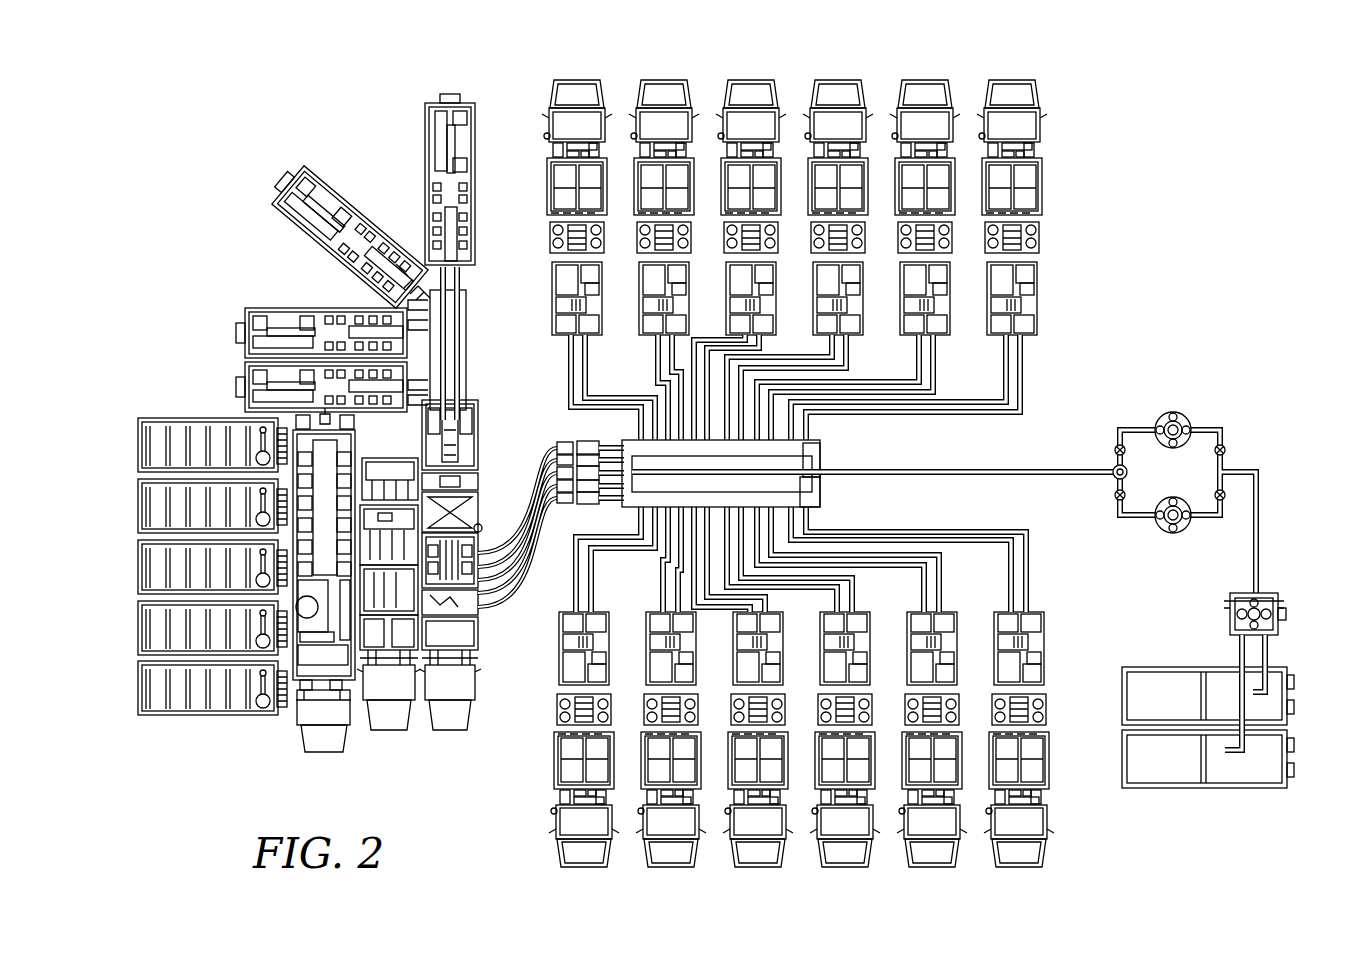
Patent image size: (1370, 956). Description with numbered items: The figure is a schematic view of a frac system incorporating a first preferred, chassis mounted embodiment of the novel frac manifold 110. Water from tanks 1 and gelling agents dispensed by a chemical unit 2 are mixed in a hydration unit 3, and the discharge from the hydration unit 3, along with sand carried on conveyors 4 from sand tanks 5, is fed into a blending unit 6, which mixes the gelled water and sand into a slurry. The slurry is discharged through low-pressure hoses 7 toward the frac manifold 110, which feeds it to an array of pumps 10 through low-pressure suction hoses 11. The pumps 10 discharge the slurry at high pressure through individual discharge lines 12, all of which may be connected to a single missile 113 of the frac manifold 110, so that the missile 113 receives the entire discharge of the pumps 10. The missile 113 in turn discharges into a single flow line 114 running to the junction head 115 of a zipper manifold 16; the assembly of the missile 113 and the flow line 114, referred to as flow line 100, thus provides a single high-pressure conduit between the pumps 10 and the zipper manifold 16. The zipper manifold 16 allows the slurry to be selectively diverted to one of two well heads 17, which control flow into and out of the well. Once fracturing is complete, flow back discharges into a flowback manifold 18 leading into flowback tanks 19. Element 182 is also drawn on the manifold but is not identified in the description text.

The tanks 1 is at (135, 408).
The chemical unit 2 is at (392, 715).
The hydration unit 3 is at (325, 740).
The conveyors 4 is at (458, 348).
The sand tanks 5 is at (448, 96).
The blending unit 6 is at (452, 715).
The low-pressure hoses 7 is at (520, 462).
The pumps 10 is at (546, 90).
The suction hoses 11 is at (566, 372).
The discharge lines 12 is at (590, 362).
The zipper manifold 16 is at (1160, 488).
The well heads 17 is at (1162, 415).
The flowback manifold 18 is at (1287, 612).
The flowback tanks 19 is at (1298, 796).
The flow line 100 is at (944, 488).
The frac manifold 110 is at (578, 430).
The missile 113 is at (807, 458).
The flow line 114 is at (928, 477).
The junction head 115 is at (1114, 480).
The manifold outlet 182 is at (815, 490).